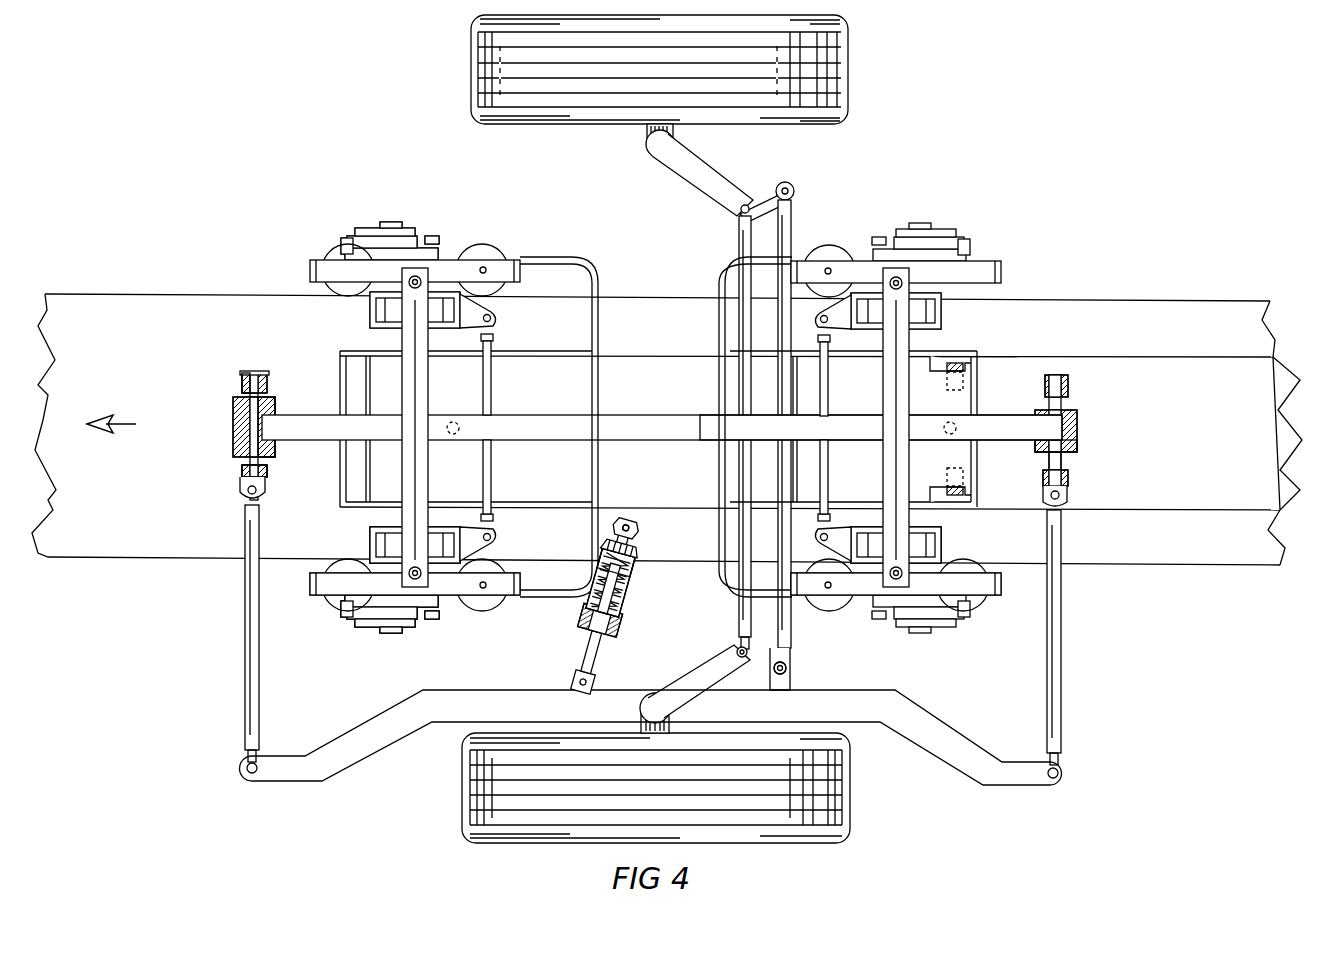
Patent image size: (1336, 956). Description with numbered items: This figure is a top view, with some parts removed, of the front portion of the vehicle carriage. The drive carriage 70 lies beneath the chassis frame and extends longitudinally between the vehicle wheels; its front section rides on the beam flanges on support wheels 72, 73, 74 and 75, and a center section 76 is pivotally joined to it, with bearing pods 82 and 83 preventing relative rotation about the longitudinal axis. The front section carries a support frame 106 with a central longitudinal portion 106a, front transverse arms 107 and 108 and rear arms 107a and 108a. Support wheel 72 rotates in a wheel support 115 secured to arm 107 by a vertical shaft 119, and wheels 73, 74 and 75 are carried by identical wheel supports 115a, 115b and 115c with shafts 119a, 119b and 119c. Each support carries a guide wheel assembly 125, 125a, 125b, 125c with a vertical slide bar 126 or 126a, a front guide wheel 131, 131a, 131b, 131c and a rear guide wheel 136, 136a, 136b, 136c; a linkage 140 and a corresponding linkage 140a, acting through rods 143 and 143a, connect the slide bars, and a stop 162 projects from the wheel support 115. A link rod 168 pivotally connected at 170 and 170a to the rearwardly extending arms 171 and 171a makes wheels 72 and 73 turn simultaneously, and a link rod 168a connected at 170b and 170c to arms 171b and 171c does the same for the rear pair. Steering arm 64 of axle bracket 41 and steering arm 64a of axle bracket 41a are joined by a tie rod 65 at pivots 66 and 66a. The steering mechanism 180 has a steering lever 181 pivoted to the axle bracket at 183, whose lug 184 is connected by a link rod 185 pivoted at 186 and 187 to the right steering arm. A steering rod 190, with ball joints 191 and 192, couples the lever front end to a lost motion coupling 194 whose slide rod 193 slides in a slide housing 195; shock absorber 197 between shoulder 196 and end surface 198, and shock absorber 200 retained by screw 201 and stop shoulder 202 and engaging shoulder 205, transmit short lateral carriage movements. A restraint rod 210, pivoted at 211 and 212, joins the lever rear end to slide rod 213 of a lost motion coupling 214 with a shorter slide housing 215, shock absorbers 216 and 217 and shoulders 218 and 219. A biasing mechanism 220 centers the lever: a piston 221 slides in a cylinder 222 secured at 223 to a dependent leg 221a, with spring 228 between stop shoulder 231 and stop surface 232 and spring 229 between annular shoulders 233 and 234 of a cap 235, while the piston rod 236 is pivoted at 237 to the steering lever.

The axle bracket 41 is at (660, 736).
The axle bracket 41a is at (684, 134).
The steering arm 64 is at (675, 682).
The steering arm 64a is at (708, 190).
The tie rod 65 is at (738, 251).
The pivotal connection 66 is at (736, 650).
The pivotal connection 66a is at (745, 204).
The drive carriage 70 is at (1205, 355).
The support wheel 72 is at (385, 525).
The support wheel 73 is at (372, 312).
The support wheel 74 is at (942, 316).
The support wheel 75 is at (942, 553).
The center section 76 is at (1278, 397).
The bearing pod 82 is at (962, 364).
The bearing pod 83 is at (965, 510).
The support frame 106 is at (520, 406).
The central longitudinal portion 106a is at (632, 420).
The front transverse arm 107 is at (400, 482).
The rear arm 107a is at (908, 500).
The front transverse arm 108 is at (400, 366).
The rear arm 108a is at (908, 370).
The wheel support 115 is at (350, 487).
The wheel support assembly 115a is at (372, 330).
The wheel support assembly 115b is at (946, 334).
The wheel support assembly 115c is at (946, 544).
The vertical shaft 119 is at (452, 610).
The vertical shaft 119a is at (458, 270).
The vertical shaft 119b is at (906, 264).
The vertical shaft 119c is at (893, 592).
The guide wheel assembly 125 is at (310, 596).
The guide wheel assembly 125a is at (312, 256).
The guide wheel assembly 125b is at (1003, 262).
The guide wheel assembly 125c is at (985, 614).
The slide bar 126 is at (420, 612).
The slide bar 126a is at (420, 240).
The front guide wheel 131 is at (338, 566).
The front guide wheel 131a is at (336, 292).
The front guide wheel 131b is at (830, 248).
The front guide wheel 131c is at (812, 600).
The rear guide wheel 136 is at (497, 560).
The rear guide wheel 136a is at (490, 246).
The rear guide wheel 136b is at (1000, 276).
The rear guide wheel 136c is at (988, 572).
The linkage 140 is at (356, 640).
The linkage 140a is at (862, 628).
The rod 143 is at (472, 600).
The rod 143a is at (500, 256).
The stop 162 is at (383, 625).
The link rod 168 is at (492, 346).
The link rod 168a is at (828, 388).
The pivotal connection 170 is at (490, 520).
The pivotal connection 170a is at (492, 318).
The pivotal connection 170b is at (836, 326).
The pivotal connection 170c is at (835, 520).
The rearwardly extending arm 171 is at (470, 525).
The rearwardly extending arm 171a is at (472, 332).
The arm 171b is at (832, 308).
The arm 171c is at (838, 514).
The steering mechanism 180 is at (292, 810).
The steering lever 181 is at (378, 762).
The pivotal connection 183 is at (578, 690).
The lug 184 is at (787, 688).
The link rod 185 is at (790, 206).
The pivotal connection 186 is at (770, 680).
The pivotal connection 187 is at (786, 181).
The steering rod 190 is at (243, 605).
The ball joint 191 is at (246, 769).
The ball joint 192 is at (247, 492).
The slide rod 193 is at (235, 415).
The lost motion coupling 194 is at (285, 390).
The slide housing 195 is at (276, 401).
The annular shoulder 196 is at (242, 473).
The shock absorber 197 is at (268, 478).
The annular end surface 198 is at (240, 464).
The shock absorber 200 is at (243, 385).
The screw 201 is at (256, 372).
The stop shoulder 202 is at (247, 380).
The shoulder 205 is at (240, 398).
The restraint rod 210 is at (1063, 606).
The pivotal connection 211 is at (1059, 773).
The pivotal connection 212 is at (1066, 497).
The slide rod 213 is at (1066, 461).
The lost motion coupling 214 is at (1082, 431).
The slide housing 215 is at (1070, 422).
The shock absorber 216 is at (1043, 478).
The shock absorber 217 is at (1045, 389).
The shoulder 218 is at (1036, 450).
The shoulder 219 is at (1036, 410).
The biasing mechanism 220 is at (601, 577).
The piston 221 is at (620, 590).
The dependent leg 221a is at (637, 524).
The cylinder 222 is at (600, 580).
The ball and socket connection 223 is at (627, 514).
The compression spring 228 is at (626, 556).
The compression spring 229 is at (602, 632).
The stop shoulder 231 is at (602, 575).
The stop surface 232 is at (606, 600).
The annular shoulder 233 is at (596, 616).
The annular shoulder 234 is at (592, 626).
The cap 235 is at (566, 642).
The piston rod 236 is at (580, 666).
The pivotal connection 237 is at (580, 692).